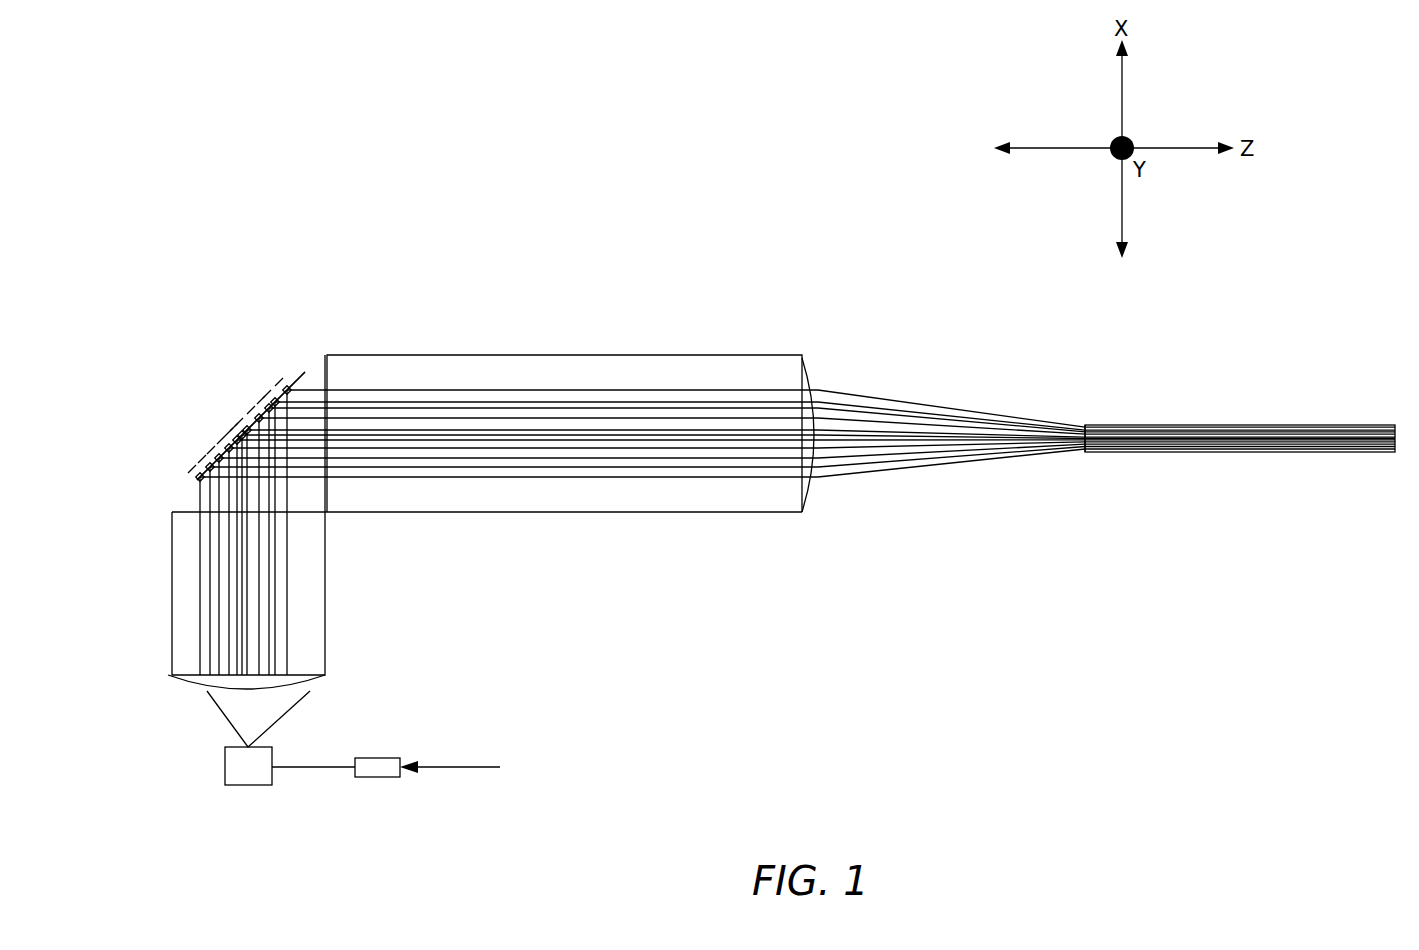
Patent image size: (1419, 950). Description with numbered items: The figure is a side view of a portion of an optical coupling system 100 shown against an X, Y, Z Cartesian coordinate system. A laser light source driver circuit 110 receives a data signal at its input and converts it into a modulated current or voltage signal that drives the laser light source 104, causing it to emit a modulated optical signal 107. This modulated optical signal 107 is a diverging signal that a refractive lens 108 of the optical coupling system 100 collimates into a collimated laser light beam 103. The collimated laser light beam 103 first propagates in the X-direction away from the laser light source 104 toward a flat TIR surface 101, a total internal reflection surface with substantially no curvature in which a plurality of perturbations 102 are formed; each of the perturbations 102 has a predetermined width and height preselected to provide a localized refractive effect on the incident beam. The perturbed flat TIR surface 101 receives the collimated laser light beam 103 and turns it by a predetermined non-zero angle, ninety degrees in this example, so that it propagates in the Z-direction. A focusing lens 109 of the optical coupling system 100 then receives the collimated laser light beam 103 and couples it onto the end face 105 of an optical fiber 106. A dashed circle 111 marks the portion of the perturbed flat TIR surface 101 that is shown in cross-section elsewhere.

The optical coupling system 100 is at (246, 192).
The flat TIR surface 101 is at (185, 382).
The perturbations 102 is at (210, 450).
The collimated laser light beam 103 is at (556, 385).
The laser light source 104 is at (225, 767).
The end face 105 is at (1081, 453).
The optical fiber 106 is at (1235, 425).
The modulated optical signal 107 is at (217, 705).
The refractive lens 108 is at (327, 690).
The focusing lens 109 is at (808, 378).
The laser light source driver circuit 110 is at (380, 758).
The dashed circle 111 is at (205, 505).